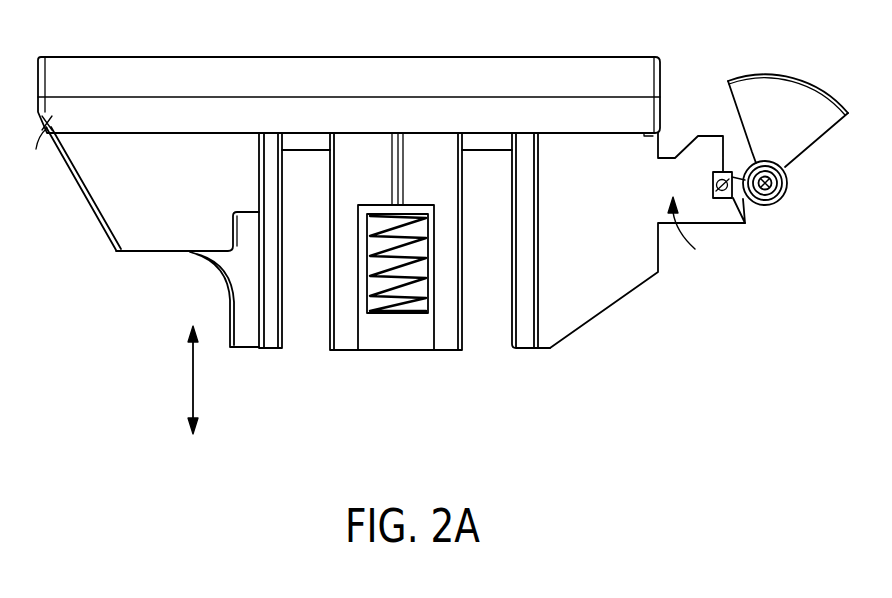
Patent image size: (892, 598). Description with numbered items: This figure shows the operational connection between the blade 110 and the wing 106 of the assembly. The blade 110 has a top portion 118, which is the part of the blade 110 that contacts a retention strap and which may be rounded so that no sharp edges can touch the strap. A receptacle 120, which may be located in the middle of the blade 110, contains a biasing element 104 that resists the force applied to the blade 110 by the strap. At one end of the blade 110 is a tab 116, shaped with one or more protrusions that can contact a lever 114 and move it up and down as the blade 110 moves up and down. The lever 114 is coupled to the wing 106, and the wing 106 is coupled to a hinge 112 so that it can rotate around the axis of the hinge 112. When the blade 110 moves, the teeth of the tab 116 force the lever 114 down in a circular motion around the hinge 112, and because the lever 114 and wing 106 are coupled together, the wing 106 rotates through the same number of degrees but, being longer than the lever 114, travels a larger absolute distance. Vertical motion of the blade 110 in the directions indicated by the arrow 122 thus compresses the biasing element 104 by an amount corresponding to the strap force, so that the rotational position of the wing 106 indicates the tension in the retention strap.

The biasing element 104 is at (394, 313).
The wing 106 is at (772, 100).
The blade 110 is at (88, 180).
The hinge 112 is at (770, 193).
The lever 114 is at (736, 200).
The tab 116 is at (647, 240).
The top portion 118 is at (383, 82).
The receptacle 120 is at (377, 238).
The arrow 122 is at (195, 385).